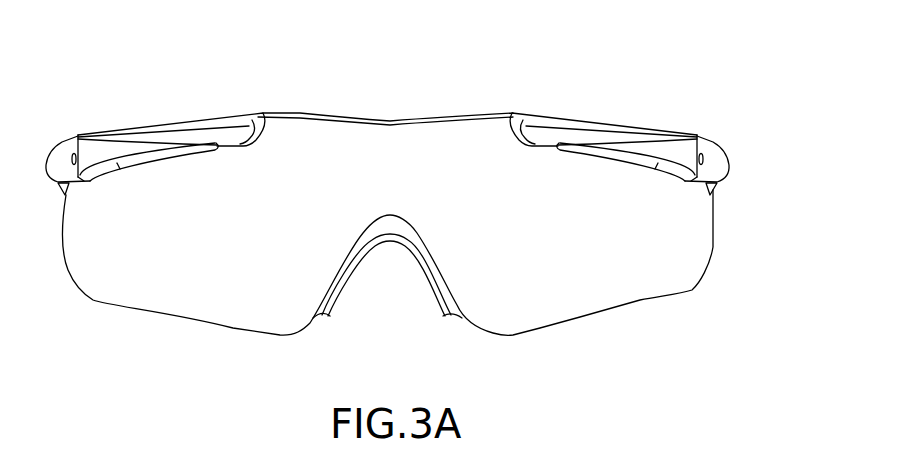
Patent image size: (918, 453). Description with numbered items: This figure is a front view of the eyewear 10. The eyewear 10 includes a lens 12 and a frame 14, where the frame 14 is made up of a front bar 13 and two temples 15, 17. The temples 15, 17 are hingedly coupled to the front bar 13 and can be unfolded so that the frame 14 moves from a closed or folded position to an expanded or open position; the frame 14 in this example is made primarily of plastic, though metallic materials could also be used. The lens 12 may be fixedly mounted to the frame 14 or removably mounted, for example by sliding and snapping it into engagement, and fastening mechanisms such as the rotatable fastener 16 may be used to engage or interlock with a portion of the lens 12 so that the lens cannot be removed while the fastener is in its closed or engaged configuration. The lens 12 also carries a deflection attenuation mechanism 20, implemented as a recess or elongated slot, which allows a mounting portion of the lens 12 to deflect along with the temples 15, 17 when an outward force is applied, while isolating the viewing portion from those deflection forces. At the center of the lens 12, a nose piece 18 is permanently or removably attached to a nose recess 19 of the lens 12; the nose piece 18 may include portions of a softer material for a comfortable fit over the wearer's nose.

The eyewear 10 is at (701, 44).
The lens 12 is at (692, 289).
The front bar 13 is at (407, 123).
The frame 14 is at (696, 133).
The temple 15 is at (722, 155).
The rotatable fastener 16 is at (208, 121).
The temple 17 is at (57, 155).
The nose piece 18 is at (332, 295).
The nose recess 19 is at (384, 312).
The deflection attenuation mechanism 20 is at (119, 190).